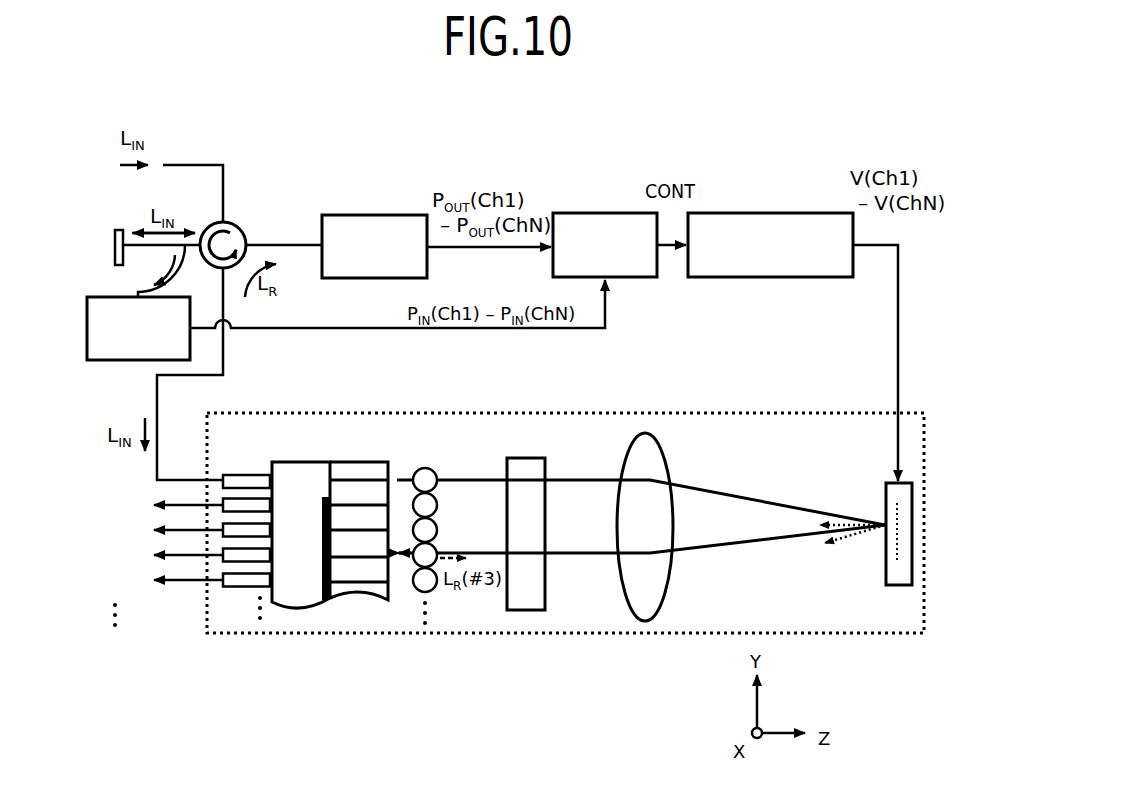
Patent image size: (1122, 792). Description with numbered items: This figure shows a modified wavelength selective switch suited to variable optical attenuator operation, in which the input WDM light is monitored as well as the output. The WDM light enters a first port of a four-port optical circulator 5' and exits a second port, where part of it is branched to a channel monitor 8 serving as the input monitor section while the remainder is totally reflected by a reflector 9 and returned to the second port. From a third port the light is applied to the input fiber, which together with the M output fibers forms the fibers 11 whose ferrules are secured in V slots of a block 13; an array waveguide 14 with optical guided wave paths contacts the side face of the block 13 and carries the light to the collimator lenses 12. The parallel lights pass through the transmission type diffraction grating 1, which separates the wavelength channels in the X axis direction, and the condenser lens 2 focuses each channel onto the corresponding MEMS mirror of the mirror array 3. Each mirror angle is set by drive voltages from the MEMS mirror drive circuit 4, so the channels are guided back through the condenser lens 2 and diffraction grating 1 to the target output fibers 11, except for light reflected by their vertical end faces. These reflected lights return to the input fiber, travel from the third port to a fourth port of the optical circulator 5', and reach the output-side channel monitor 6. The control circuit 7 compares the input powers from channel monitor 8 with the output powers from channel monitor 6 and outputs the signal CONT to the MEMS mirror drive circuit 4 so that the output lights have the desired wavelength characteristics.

The diffraction grating 1 is at (518, 458).
The condenser lens 2 is at (637, 434).
The mirror array 3 is at (873, 645).
The MEMS mirror drive circuit 4 is at (745, 213).
The optical circulator 5' is at (238, 216).
The channel monitor 6 is at (360, 215).
The control circuit 7 is at (590, 213).
The channel monitor 8 is at (100, 361).
The reflector 9 is at (114, 230).
The input fiber and output fibers 11 is at (251, 475).
The collimator lenses 12 is at (427, 468).
The block 13 is at (307, 462).
The array waveguide 14 is at (362, 462).